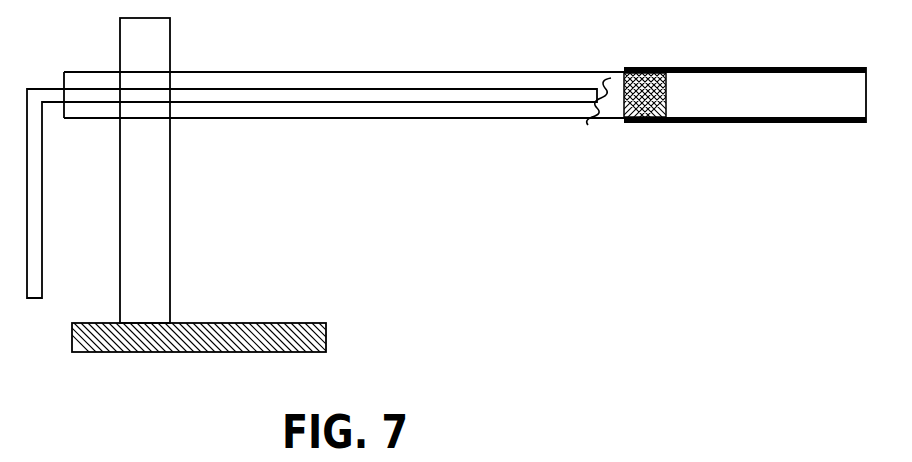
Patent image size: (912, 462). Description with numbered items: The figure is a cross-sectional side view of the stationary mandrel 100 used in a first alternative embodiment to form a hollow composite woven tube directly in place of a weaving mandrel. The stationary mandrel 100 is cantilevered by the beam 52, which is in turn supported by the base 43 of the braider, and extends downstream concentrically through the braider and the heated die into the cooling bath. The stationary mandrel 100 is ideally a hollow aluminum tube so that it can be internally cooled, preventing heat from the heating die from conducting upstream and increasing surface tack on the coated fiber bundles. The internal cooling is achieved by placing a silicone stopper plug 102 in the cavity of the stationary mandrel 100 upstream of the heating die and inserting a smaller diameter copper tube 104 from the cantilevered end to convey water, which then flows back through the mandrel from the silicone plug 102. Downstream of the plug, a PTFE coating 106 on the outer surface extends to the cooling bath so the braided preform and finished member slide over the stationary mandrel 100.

The beam 52 is at (170, 227).
The base 43 is at (262, 323).
The stationary mandrel 100 is at (492, 119).
The copper tube 104 is at (392, 102).
The silicone stopper plug 102 is at (640, 124).
The PTFE coating 106 is at (767, 124).